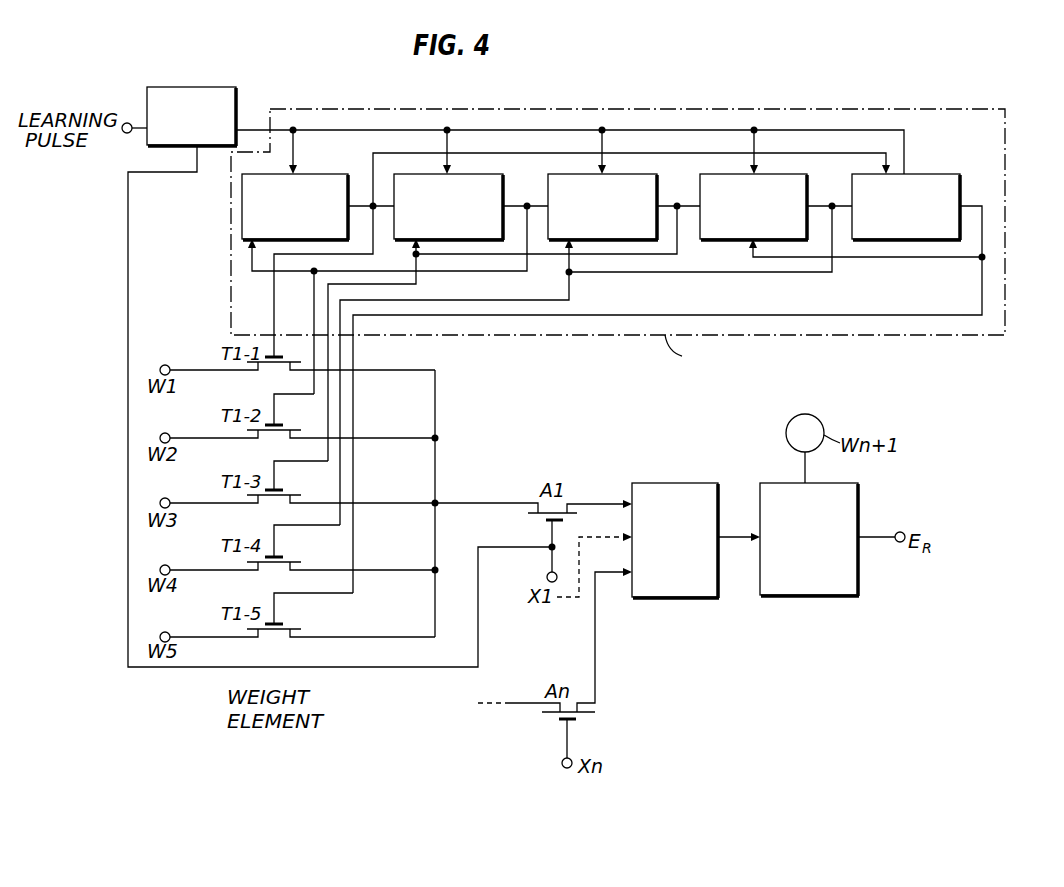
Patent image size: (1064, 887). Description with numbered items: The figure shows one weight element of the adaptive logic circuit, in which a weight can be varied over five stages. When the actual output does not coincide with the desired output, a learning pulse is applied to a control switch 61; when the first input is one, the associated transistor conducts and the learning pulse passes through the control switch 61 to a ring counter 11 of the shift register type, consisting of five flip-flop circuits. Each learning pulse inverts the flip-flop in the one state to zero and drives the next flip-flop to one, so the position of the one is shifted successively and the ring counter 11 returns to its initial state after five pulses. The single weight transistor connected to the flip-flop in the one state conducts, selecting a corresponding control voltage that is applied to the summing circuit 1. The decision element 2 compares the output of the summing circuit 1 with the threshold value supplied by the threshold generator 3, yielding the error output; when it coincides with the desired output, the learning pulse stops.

The summing circuit 1 is at (670, 598).
The decision element 2 is at (788, 596).
The threshold generator 3 is at (786, 434).
The control switch 61 is at (147, 140).
The ring counter 11 is at (1005, 112).